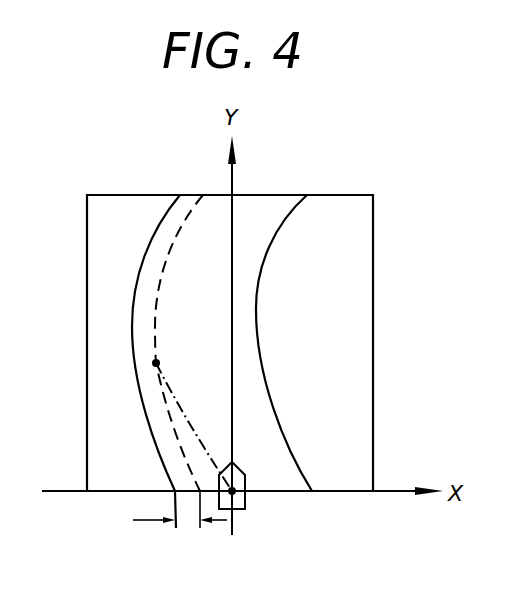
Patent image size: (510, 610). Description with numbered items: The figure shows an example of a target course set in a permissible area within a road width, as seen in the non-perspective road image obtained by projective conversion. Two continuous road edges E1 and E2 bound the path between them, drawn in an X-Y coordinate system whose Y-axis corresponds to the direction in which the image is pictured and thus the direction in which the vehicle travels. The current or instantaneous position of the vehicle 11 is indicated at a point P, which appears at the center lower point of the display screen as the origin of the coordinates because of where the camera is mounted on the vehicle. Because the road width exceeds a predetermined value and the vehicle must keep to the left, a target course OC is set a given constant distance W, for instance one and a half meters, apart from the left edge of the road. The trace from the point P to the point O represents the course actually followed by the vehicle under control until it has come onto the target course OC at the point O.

The continuous road edge E1 is at (140, 270).
The continuous road edge E2 is at (260, 287).
The target course OC is at (155, 322).
The point O is at (152, 364).
The point P is at (240, 498).
The vehicle 11 is at (242, 510).
The constant distance W is at (180, 521).